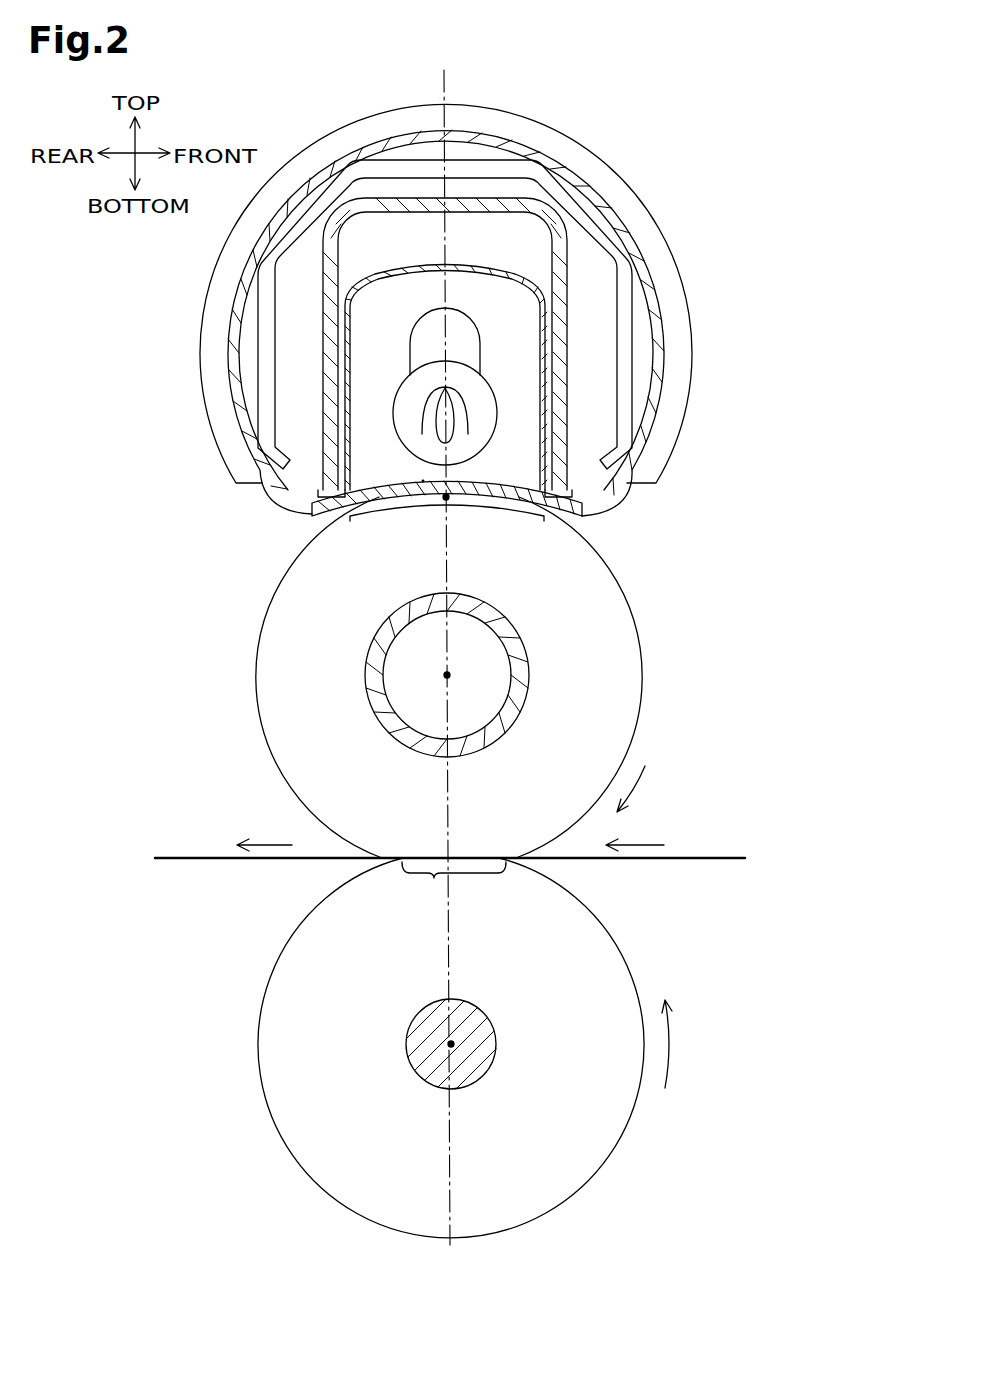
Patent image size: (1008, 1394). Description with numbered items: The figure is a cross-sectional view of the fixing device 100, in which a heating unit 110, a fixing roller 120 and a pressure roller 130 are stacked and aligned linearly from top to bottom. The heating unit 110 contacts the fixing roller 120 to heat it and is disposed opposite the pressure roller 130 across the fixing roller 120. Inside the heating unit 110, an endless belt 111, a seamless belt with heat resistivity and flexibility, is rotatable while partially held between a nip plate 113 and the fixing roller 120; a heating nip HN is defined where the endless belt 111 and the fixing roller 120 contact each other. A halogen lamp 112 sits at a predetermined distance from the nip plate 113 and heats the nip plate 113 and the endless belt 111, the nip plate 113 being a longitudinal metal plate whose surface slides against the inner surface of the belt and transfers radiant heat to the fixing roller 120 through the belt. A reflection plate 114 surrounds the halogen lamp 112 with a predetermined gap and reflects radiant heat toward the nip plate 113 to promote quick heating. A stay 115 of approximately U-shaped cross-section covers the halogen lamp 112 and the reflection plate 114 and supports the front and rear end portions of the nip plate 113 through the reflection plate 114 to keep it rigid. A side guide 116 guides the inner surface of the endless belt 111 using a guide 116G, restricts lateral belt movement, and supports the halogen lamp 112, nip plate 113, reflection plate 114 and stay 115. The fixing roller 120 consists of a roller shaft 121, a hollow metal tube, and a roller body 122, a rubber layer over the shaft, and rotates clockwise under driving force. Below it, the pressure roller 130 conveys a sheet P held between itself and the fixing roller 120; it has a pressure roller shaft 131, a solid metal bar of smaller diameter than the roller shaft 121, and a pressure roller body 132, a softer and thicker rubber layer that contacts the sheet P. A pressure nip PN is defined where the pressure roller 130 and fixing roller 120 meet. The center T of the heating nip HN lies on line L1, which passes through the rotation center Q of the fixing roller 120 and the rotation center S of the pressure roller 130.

The fixing device 100 is at (675, 122).
The heating unit 110 is at (578, 122).
The endless belt 111 is at (628, 222).
The halogen lamp 112 is at (497, 405).
The nip plate 113 is at (503, 482).
The reflection plate 114 is at (485, 268).
The stay 115 is at (570, 353).
The side guide 116 is at (674, 258).
The guide 116G is at (623, 329).
The fixing roller 120 is at (264, 561).
The roller shaft 121 is at (377, 635).
The roller body 122 is at (263, 655).
The pressure roller 130 is at (659, 936).
The pressure roller shaft 131 is at (478, 1079).
The pressure roller body 132 is at (622, 1106).
The line L1 is at (440, 88).
The heating nip HN is at (447, 516).
The pressure nip PN is at (454, 884).
The sheet P is at (699, 856).
The rotation center of the fixing roller Q is at (459, 676).
The rotation center of the pressure roller S is at (454, 1044).
The center of the heating nip T is at (423, 480).